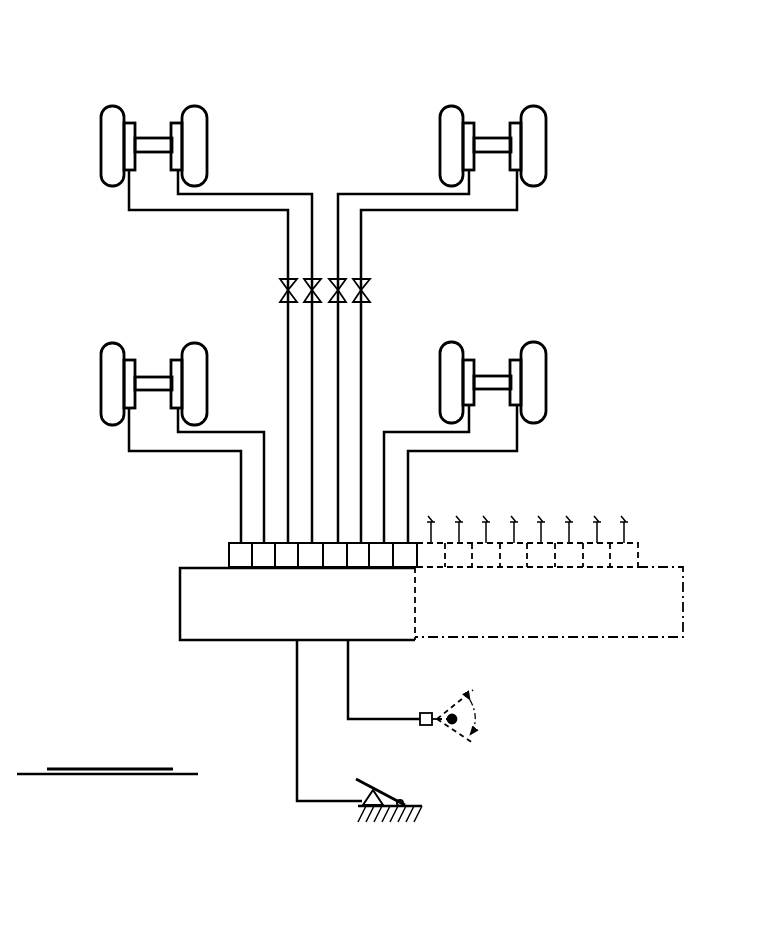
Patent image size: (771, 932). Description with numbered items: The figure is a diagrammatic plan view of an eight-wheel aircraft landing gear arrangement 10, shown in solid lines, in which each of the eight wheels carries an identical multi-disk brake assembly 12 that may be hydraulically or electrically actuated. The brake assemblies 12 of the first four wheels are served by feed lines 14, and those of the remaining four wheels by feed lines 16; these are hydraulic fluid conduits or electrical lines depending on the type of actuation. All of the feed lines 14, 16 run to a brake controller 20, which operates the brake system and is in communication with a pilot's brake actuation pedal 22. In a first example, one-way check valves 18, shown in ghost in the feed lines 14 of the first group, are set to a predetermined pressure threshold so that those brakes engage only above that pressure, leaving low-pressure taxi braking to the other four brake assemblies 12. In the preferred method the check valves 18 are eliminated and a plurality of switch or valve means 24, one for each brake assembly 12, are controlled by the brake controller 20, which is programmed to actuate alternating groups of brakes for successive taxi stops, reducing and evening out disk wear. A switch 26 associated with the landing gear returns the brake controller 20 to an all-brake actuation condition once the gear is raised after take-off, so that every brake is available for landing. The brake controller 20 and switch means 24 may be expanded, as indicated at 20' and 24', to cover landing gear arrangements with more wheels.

The landing gear arrangement 10 is at (166, 56).
The brake assembly 12 is at (129, 122).
The feed lines 14 is at (233, 193).
The feed lines 16 is at (232, 431).
The one-way check valves 18 is at (372, 290).
The brake controller 20 is at (253, 684).
The expanded brake controller 20' is at (568, 623).
The brake actuation pedal 22 is at (405, 790).
The switch or valve means 24 is at (251, 544).
The expanded switch means 24' is at (563, 538).
The switch 26 is at (424, 713).